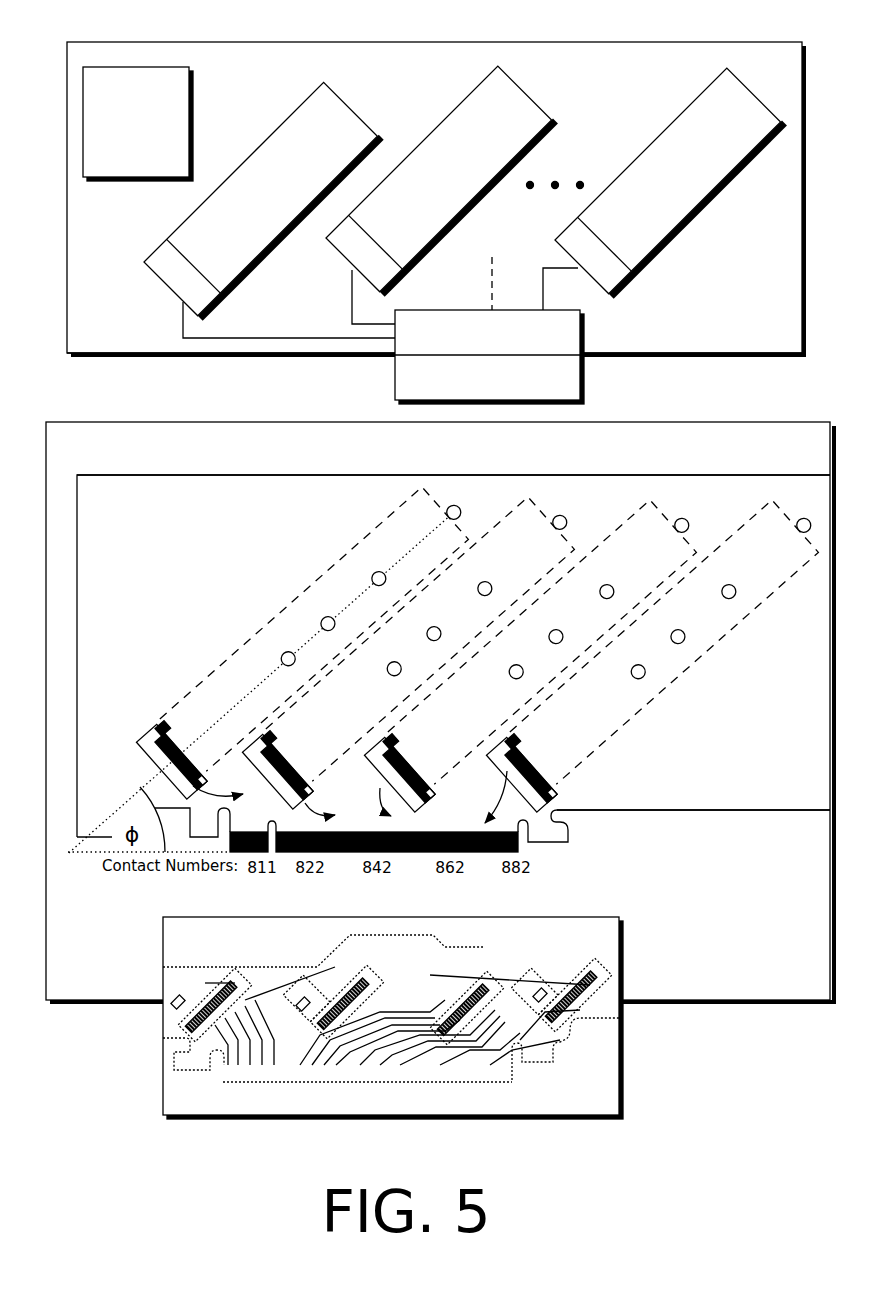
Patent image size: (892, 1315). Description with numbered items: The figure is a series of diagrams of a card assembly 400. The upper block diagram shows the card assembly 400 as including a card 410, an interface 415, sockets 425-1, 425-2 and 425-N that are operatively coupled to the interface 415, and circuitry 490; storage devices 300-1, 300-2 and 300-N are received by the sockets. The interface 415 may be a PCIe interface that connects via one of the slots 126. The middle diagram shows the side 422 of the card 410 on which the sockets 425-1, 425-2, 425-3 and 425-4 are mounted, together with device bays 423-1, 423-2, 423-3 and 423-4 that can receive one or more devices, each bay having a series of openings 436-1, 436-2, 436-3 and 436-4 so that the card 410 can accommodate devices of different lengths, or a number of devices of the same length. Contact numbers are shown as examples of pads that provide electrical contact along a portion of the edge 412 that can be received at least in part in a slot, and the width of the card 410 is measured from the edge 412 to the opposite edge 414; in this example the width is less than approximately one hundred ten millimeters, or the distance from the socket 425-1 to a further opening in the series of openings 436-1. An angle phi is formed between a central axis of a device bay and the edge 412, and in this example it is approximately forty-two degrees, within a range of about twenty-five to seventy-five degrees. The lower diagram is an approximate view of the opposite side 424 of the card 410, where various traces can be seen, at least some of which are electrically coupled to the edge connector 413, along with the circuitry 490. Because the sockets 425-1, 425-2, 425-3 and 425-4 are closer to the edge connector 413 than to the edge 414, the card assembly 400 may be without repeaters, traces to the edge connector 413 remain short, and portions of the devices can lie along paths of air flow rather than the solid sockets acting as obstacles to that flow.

The card assembly 400 is at (436, 182).
The card 410 is at (434, 211).
The circuitry 490 is at (287, 536).
The storage device 300-1 is at (264, 201).
The storage device 300-2 is at (442, 181).
The storage device 300-N is at (671, 183).
The socket 425-1 is at (175, 278).
The socket 425-2 is at (357, 260).
The socket 425-3 is at (393, 759).
The socket 425-4 is at (515, 759).
The socket 425-N is at (610, 268).
The interface 415 is at (489, 357).
The slot 126 is at (487, 374).
The edge 414 is at (617, 475).
The edge 412 is at (613, 810).
The side 422 is at (453, 658).
The device bay 423-1 is at (257, 678).
The device bay 423-2 is at (420, 639).
The device bay 423-3 is at (542, 642).
The device bay 423-4 is at (664, 642).
The series of openings 436-1 is at (283, 651).
The series of openings 436-2 is at (571, 504).
The series of openings 436-3 is at (699, 502).
The series of openings 436-4 is at (629, 696).
The edge connector 413 is at (477, 852).
The side 424 is at (393, 1018).